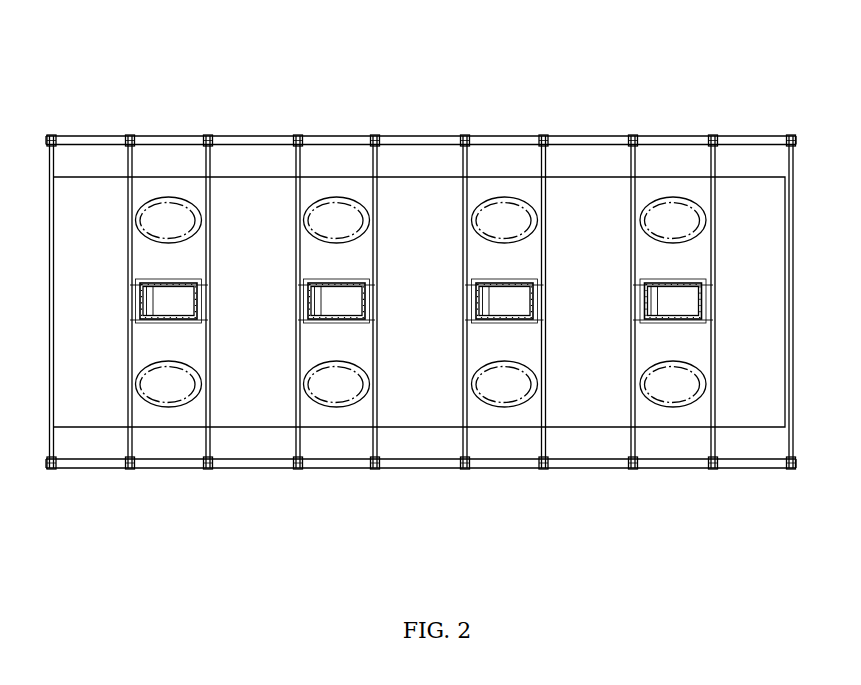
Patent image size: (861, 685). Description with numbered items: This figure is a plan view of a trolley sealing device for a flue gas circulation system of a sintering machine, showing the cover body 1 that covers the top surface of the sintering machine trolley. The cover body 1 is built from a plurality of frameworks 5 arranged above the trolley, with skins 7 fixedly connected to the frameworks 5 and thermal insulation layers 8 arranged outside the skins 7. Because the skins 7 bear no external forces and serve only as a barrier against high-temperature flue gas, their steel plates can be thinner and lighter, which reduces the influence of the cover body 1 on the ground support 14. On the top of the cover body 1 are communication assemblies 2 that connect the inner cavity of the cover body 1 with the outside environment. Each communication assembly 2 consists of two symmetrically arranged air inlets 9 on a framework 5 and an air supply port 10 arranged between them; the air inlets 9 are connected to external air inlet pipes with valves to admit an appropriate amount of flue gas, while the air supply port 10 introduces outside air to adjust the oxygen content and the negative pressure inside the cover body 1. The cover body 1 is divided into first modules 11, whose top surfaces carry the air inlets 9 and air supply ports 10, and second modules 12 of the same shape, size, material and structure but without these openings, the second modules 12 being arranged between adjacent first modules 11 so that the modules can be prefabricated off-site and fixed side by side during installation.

The cover body 1 is at (382, 62).
The communication assembly 2 is at (312, 528).
The framework 5 is at (297, 162).
The skin 7 is at (407, 216).
The thermal insulation layer 8 is at (490, 183).
The air inlet 9 is at (202, 521).
The air supply port 10 is at (269, 521).
The first module 11 is at (648, 258).
The second module 12 is at (736, 268).
The ground support 14 is at (33, 531).